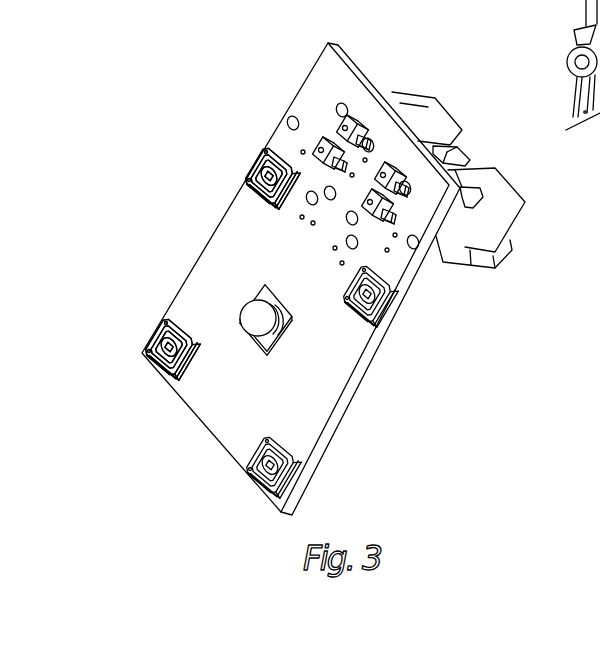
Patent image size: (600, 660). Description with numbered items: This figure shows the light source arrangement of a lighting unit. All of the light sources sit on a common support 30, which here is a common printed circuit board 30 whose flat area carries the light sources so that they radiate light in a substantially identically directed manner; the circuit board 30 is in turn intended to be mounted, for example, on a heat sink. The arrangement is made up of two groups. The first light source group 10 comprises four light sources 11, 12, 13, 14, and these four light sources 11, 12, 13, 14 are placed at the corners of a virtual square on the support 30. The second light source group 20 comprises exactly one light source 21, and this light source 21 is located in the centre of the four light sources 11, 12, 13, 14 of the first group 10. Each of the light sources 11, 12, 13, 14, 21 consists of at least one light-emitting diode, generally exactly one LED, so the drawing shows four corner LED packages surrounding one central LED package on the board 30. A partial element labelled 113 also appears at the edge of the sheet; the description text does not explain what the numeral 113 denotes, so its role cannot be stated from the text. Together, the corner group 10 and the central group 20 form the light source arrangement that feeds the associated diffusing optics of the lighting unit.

The first light source group 10 is at (147, 323).
The light source 11 is at (257, 148).
The light source 12 is at (393, 313).
The light source 13 is at (147, 355).
The light source 14 is at (248, 478).
The second light source group 20 is at (249, 348).
The light source 21 is at (257, 322).
The common support 30 is at (333, 93).
The holder portion 113 is at (565, 0).